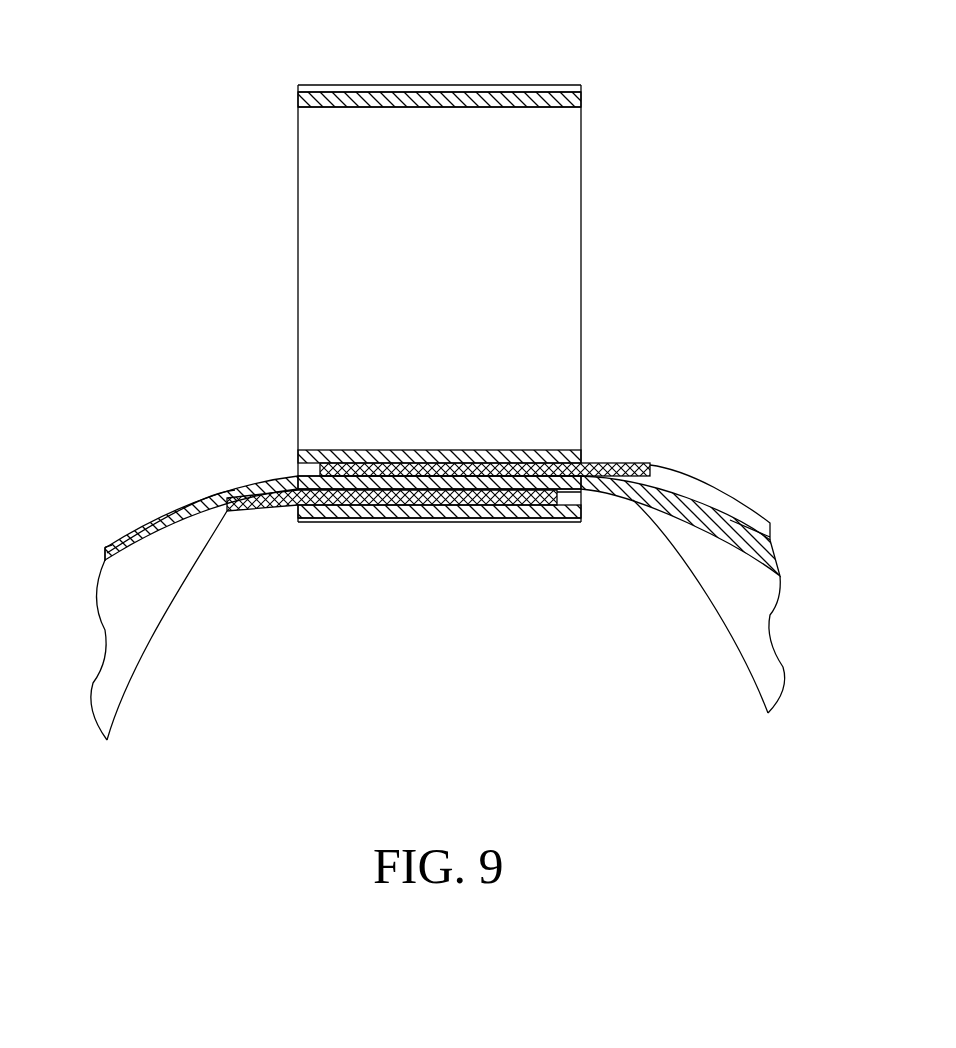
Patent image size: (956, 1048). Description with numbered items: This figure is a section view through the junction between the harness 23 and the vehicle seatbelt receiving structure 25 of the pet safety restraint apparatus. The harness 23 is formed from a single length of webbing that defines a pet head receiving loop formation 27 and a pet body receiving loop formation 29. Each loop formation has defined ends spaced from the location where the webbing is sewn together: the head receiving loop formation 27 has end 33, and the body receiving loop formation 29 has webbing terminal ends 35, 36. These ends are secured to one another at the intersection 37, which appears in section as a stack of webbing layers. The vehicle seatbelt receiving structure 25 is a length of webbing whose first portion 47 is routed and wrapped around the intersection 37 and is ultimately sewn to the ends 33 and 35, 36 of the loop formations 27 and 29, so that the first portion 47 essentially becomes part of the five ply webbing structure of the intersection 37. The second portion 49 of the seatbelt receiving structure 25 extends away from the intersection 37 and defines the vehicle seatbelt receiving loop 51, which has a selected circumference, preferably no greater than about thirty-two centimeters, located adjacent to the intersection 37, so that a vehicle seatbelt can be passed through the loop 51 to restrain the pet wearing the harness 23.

The harness 23 is at (720, 507).
The vehicle seatbelt receiving structure 25 is at (483, 85).
The pet head receiving loop formation 27 is at (170, 582).
The pet body receiving loop formation 29 is at (123, 547).
The end of pet head receiving loop formation 33 is at (553, 470).
The webbing terminal end of pet body receiving loop formation 35 is at (418, 483).
The webbing terminal end of pet body receiving loop formation 36 is at (493, 486).
The intersection 37 is at (463, 474).
The first portion 47 is at (332, 512).
The second portion 49 is at (317, 100).
The vehicle seatbelt receiving loop 51 is at (546, 190).